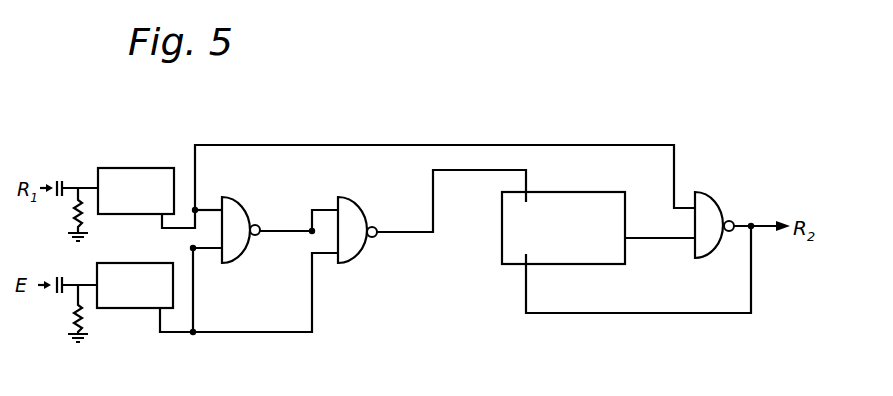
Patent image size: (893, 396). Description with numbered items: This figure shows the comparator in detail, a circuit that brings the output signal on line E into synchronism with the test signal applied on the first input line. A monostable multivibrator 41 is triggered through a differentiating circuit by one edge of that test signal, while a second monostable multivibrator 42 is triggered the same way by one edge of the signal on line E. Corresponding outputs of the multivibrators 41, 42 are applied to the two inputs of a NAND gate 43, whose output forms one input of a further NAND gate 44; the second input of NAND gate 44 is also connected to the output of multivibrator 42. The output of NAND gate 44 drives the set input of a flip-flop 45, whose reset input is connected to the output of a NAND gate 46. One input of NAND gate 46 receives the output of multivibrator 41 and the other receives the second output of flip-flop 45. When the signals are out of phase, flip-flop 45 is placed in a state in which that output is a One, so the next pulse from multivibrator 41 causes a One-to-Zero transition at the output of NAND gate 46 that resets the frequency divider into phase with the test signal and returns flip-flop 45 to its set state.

The monostable multivibrator 41 is at (131, 170).
The monostable multivibrator 42 is at (115, 264).
The NAND gate 43 is at (233, 208).
The NAND gate 44 is at (352, 215).
The flip-flop 45 is at (573, 205).
The NAND gate 46 is at (711, 210).